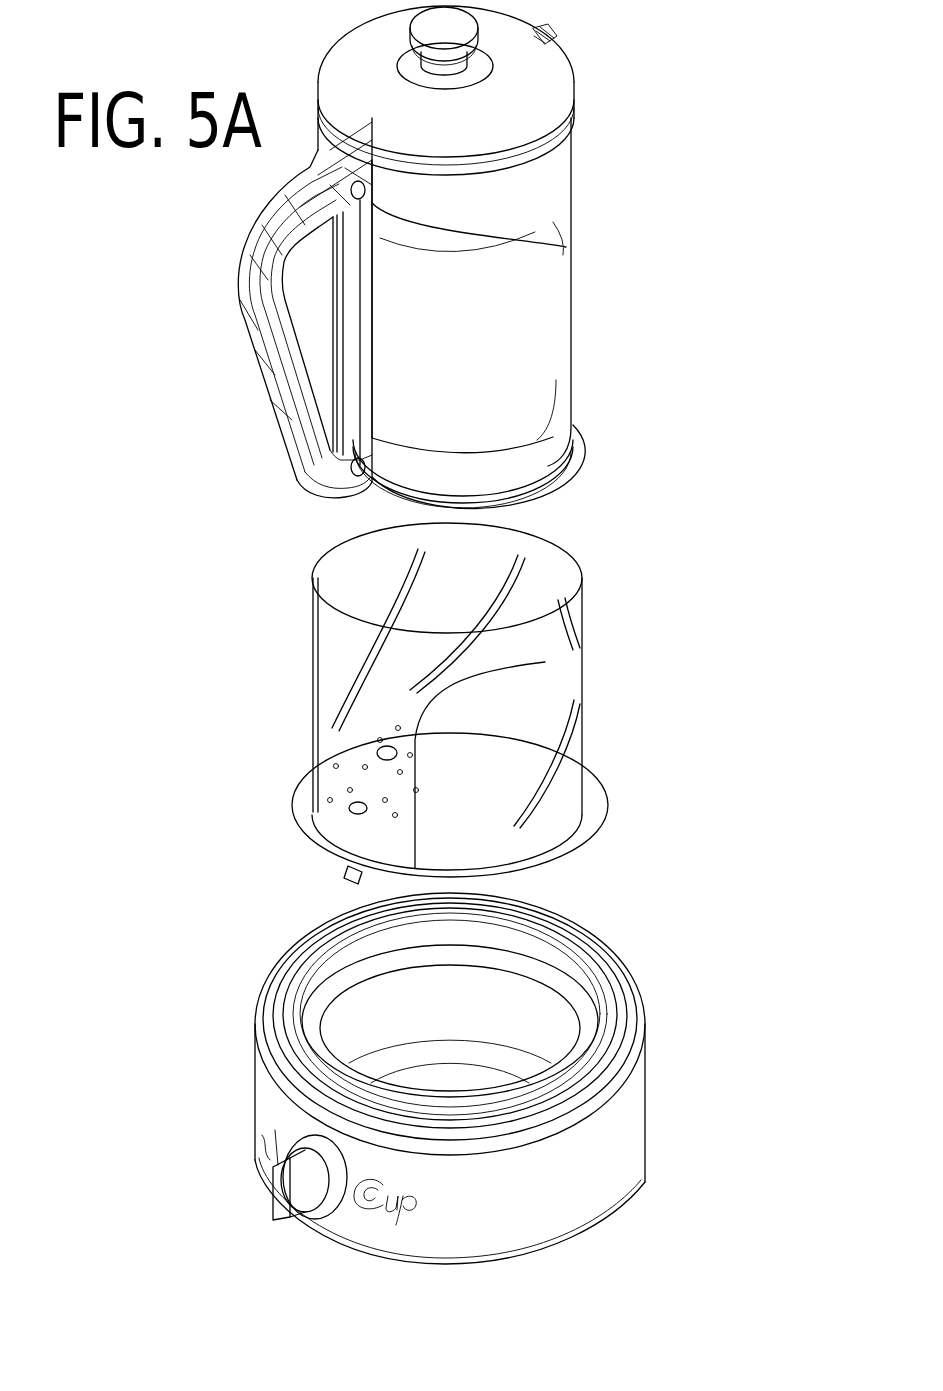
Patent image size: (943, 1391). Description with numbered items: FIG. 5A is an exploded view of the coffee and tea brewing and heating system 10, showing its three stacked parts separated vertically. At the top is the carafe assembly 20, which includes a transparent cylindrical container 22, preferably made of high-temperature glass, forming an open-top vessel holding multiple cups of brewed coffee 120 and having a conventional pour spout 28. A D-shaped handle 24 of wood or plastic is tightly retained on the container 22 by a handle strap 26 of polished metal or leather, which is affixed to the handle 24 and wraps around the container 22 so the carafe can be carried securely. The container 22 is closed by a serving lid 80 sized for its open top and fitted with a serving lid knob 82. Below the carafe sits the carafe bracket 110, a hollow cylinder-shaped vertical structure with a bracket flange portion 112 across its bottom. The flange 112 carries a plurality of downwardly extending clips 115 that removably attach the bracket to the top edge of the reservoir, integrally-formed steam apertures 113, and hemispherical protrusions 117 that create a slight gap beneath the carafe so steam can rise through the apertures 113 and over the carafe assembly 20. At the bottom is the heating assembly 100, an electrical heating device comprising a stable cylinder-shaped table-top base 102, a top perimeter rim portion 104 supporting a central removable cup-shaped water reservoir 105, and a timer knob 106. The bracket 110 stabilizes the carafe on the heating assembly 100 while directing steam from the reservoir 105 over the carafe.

The system 10 is at (160, 580).
The carafe assembly 20 is at (570, 314).
The transparent cylindrical container 22 is at (373, 488).
The handle 24 is at (267, 370).
The handle strap 26 is at (520, 187).
The pour spout 28 is at (547, 33).
The serving lid 80 is at (366, 88).
The serving lid knob 82 is at (452, 24).
The brewed coffee 120 is at (545, 263).
The carafe bracket 110 is at (610, 605).
The bracket flange portion 112 is at (588, 808).
The steam apertures 113 is at (343, 870).
The downwardly extending clips 115 is at (344, 873).
The hemispherical protrusions 117 is at (387, 757).
The heating assembly 100 is at (672, 1085).
The table-top base 102 is at (593, 1197).
The top perimeter rim portion 104 is at (627, 970).
The water reservoir 105 is at (397, 1003).
The timer knob 106 is at (277, 1193).